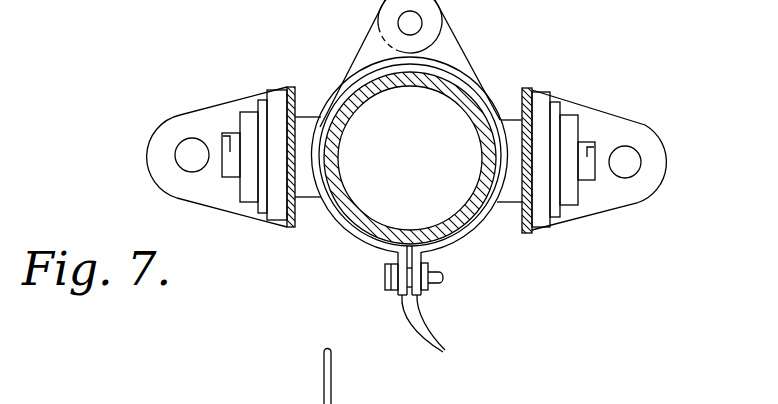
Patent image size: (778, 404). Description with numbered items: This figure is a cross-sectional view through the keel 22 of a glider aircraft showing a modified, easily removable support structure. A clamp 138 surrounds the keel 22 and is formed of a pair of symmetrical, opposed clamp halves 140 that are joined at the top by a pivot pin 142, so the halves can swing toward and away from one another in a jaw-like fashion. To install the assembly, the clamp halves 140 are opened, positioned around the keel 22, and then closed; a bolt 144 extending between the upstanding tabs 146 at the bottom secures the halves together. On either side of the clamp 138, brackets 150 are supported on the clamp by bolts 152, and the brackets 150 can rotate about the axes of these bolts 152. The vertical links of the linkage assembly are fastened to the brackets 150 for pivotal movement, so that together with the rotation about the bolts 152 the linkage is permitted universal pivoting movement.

The keel 22 is at (430, 96).
The clamp 138 is at (487, 80).
The clamp halves 140 is at (347, 235).
The pivot pin 142 is at (412, 23).
The bolt 144 is at (387, 279).
The upstanding tabs 146 is at (442, 338).
The brackets 150 is at (220, 196).
The bolts 152 is at (220, 138).